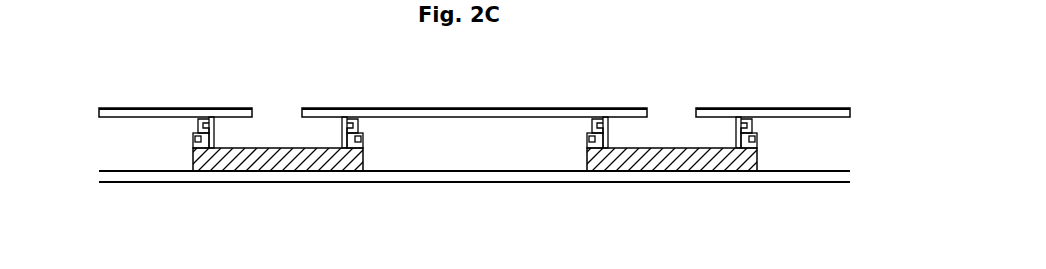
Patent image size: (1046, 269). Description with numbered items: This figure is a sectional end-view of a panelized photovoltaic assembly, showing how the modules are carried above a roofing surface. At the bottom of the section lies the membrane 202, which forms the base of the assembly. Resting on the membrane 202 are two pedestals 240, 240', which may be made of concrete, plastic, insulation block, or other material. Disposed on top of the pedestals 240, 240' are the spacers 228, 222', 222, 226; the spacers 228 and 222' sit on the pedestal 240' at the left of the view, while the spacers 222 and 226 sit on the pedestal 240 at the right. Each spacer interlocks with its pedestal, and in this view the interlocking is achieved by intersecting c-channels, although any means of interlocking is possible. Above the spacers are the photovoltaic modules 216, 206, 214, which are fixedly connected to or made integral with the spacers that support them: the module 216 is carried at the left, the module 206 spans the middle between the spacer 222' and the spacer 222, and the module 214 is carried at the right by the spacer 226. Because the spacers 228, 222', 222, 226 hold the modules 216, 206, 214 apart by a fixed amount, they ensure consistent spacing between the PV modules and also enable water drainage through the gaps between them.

The membrane 202 is at (514, 175).
The module 206 is at (462, 107).
The module 214 is at (787, 107).
The module 216 is at (190, 108).
The spacer 222 is at (583, 182).
The spacer 222' is at (359, 182).
The spacer 226 is at (733, 128).
The spacer 228 is at (213, 128).
The pedestal 240 is at (669, 197).
The pedestal 240' is at (275, 197).